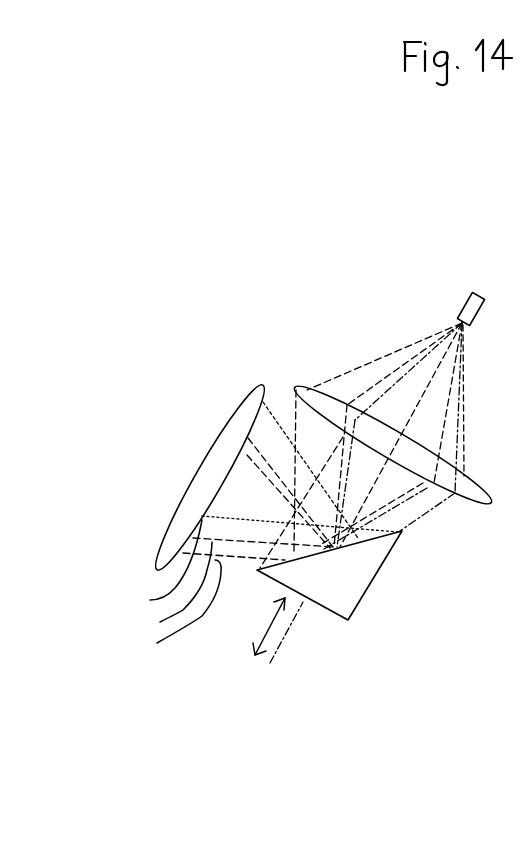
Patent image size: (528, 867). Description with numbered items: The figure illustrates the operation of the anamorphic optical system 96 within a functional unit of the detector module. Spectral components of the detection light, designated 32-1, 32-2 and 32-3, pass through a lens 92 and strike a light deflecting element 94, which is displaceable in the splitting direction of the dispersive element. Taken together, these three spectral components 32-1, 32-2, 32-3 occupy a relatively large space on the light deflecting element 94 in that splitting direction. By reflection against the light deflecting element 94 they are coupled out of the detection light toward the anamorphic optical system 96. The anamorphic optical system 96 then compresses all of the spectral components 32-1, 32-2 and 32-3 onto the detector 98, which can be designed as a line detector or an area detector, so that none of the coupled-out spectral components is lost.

The spectral component 32-1 is at (150, 600).
The spectral component 32-2 is at (160, 622).
The spectral component 32-3 is at (157, 643).
The lens 92 is at (202, 498).
The light deflecting element 94 is at (267, 595).
The anamorphic optical system 96 is at (313, 388).
The detector 98 is at (465, 294).